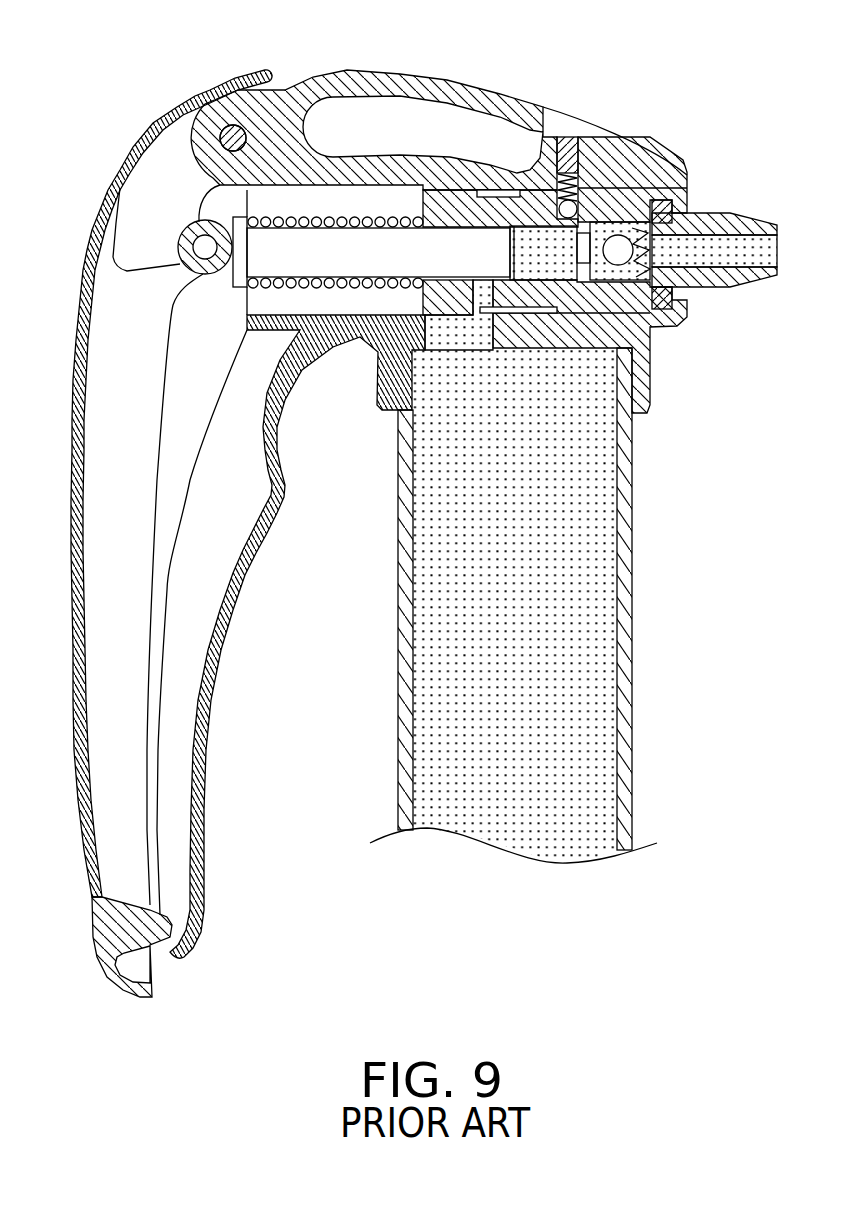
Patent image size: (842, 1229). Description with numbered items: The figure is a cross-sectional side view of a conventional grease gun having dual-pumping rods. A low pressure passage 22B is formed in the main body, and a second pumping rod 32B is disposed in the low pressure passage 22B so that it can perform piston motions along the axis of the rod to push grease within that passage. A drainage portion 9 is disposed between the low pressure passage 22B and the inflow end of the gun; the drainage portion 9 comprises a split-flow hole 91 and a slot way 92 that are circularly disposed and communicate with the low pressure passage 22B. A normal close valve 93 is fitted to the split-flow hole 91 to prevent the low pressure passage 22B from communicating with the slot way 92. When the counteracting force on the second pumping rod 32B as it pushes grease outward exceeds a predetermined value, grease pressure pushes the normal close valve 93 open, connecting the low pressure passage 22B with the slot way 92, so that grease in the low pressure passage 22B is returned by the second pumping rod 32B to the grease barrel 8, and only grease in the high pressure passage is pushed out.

The grease barrel 8 is at (632, 598).
The drainage portion 9 is at (530, 109).
The split-flow hole 91 is at (565, 140).
The slot way 92 is at (503, 200).
The normal close valve 93 is at (590, 158).
The low pressure passage 22B is at (343, 237).
The second pumping rod 32B is at (378, 243).